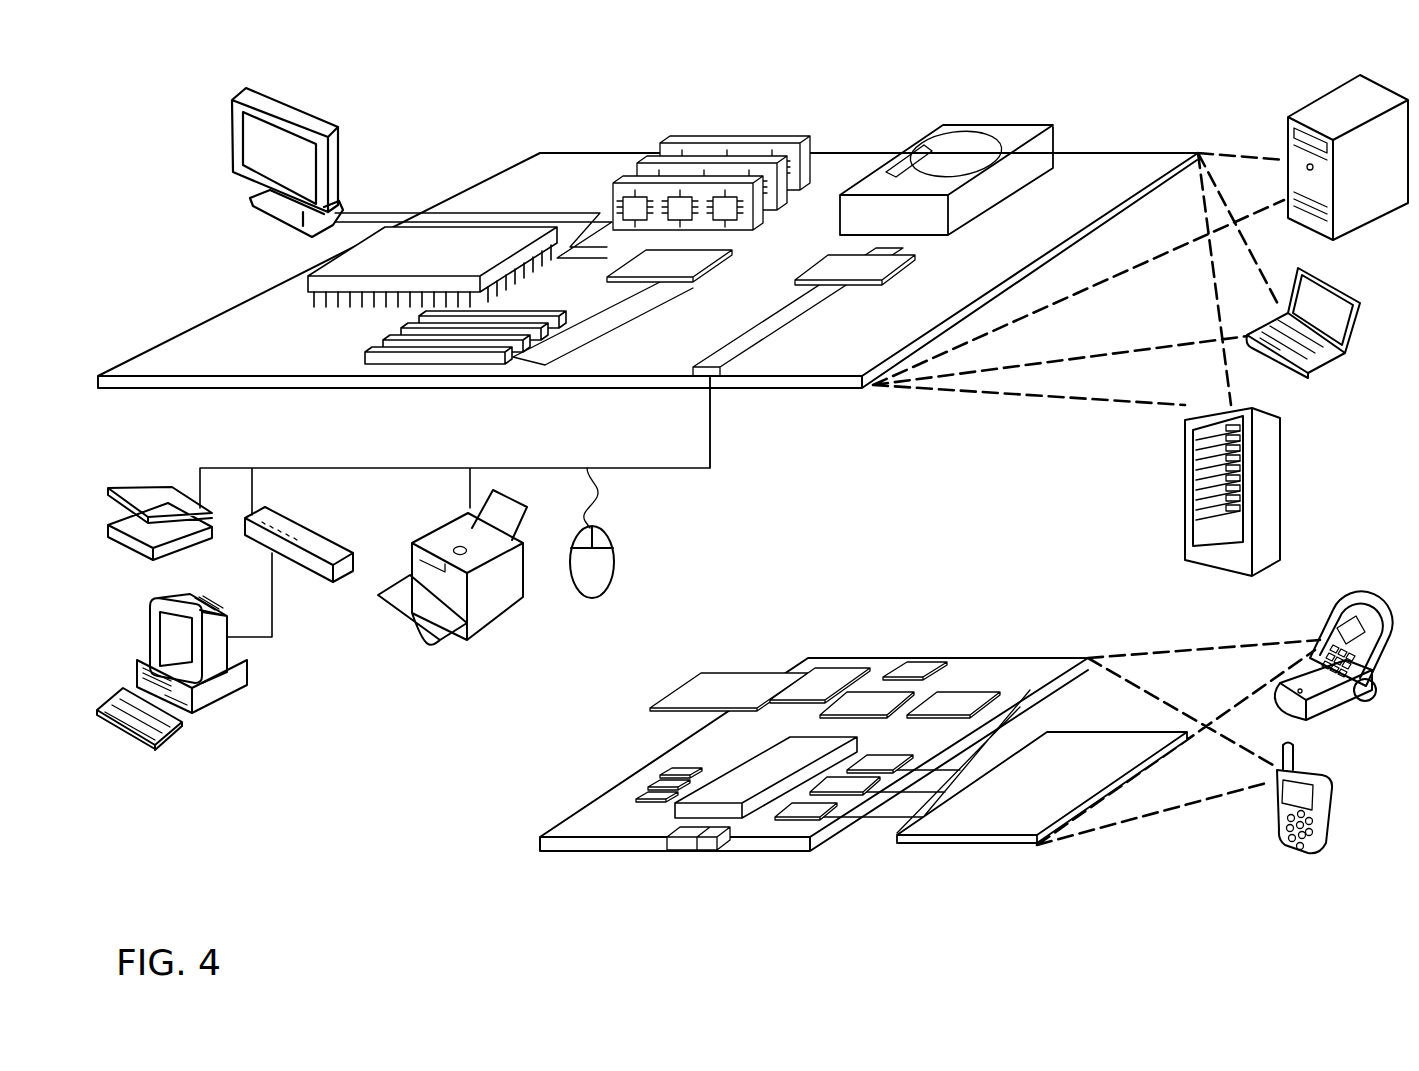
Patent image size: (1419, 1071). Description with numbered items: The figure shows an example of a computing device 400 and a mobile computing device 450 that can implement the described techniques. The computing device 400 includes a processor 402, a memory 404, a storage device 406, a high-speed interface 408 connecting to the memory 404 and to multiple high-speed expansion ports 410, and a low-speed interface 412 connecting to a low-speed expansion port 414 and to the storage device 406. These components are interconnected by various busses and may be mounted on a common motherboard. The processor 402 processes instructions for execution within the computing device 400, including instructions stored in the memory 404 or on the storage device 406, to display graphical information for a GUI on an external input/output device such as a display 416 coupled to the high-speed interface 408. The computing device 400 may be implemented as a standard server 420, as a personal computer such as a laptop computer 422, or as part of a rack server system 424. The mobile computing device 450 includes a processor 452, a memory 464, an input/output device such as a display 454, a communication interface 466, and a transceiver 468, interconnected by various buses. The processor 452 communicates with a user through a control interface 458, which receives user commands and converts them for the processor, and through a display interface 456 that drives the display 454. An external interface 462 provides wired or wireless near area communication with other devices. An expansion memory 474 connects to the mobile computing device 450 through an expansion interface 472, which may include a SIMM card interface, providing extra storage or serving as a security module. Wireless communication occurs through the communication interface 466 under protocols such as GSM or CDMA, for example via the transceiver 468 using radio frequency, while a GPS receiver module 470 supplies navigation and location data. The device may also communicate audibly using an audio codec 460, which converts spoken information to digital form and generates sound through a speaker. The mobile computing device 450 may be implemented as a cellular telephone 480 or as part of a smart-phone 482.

The computing device 400 is at (452, 115).
The processor 402 is at (306, 280).
The memory 404 is at (674, 141).
The storage device 406 is at (926, 124).
The high-speed interface 408 is at (620, 252).
The high-speed expansion ports 410 is at (395, 347).
The low-speed interface 412 is at (828, 265).
The low-speed expansion port 414 is at (722, 380).
The display 416 is at (236, 100).
The standard server 420 is at (1285, 133).
The laptop computer 422 is at (1340, 298).
The rack server system 424 is at (1185, 512).
The mobile computing device 450 is at (512, 852).
The processor 452 is at (740, 805).
The display 454 is at (1005, 820).
The display interface 456 is at (830, 820).
The control interface 458 is at (870, 790).
The audio codec 460 is at (875, 760).
The external interface 462 is at (695, 840).
The memory 464 is at (665, 795).
The communication interface 466 is at (860, 695).
The transceiver 468 is at (965, 700).
The GPS receiver module 470 is at (928, 672).
The expansion interface 472 is at (790, 670).
The expansion memory 474 is at (698, 673).
The cellular telephone 480 is at (1338, 616).
The smart-phone 482 is at (1277, 803).